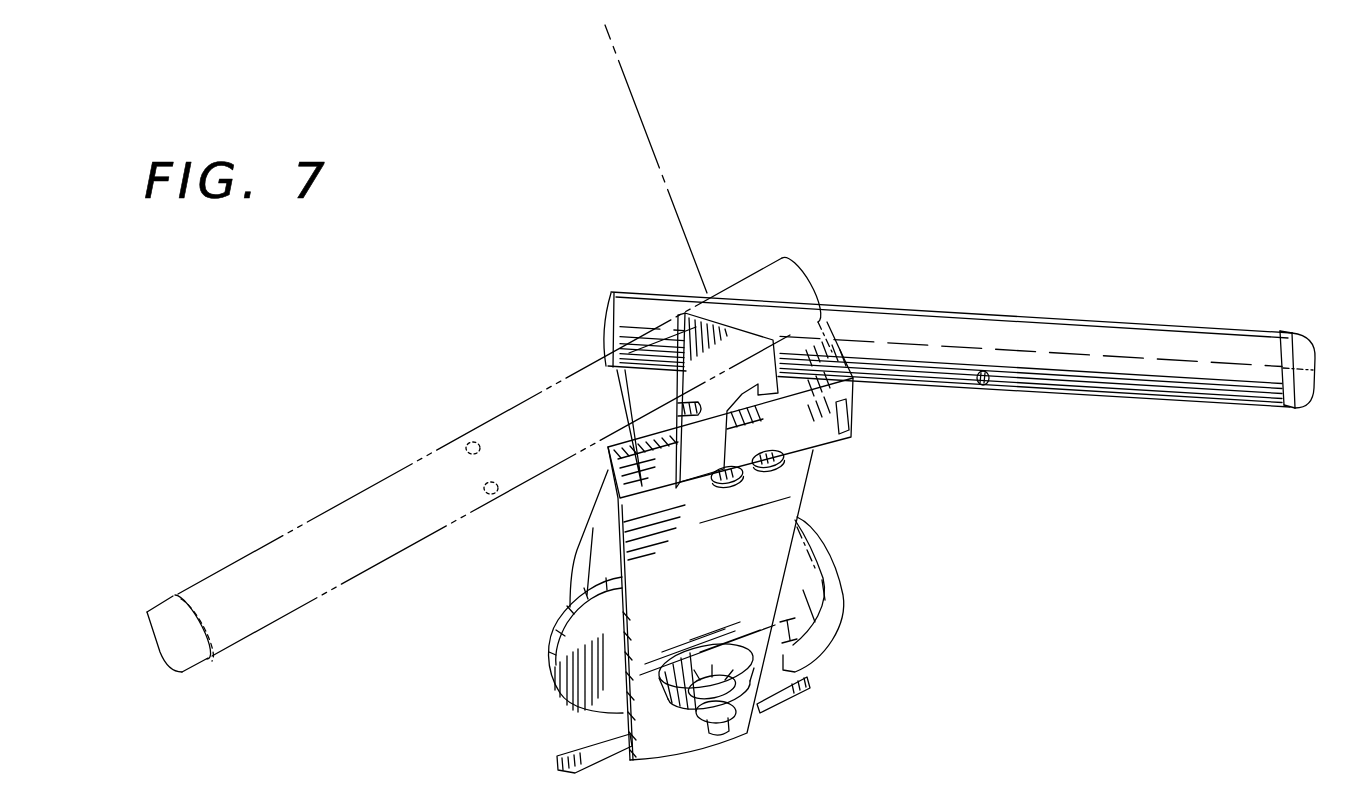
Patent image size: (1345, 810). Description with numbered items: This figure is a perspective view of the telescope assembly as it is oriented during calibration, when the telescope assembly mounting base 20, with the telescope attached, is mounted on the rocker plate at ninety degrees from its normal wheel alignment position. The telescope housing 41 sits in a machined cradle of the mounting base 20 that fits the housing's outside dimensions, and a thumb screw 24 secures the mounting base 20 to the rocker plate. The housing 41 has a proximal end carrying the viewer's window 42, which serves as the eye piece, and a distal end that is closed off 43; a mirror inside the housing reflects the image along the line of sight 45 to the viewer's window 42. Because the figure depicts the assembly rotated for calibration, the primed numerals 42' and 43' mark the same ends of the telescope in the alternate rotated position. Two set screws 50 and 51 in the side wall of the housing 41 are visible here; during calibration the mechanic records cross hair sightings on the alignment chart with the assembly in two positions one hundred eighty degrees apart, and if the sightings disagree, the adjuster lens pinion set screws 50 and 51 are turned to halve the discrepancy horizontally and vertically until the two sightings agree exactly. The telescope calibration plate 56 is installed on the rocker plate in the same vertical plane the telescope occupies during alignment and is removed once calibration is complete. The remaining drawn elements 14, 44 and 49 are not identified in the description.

The base mounting bracket 14 is at (600, 687).
The telescope assembly mounting base 20 is at (803, 428).
The thumb screw 24 is at (772, 468).
The telescope housing 41 is at (1103, 332).
The viewer's window 42 is at (1300, 318).
The end cap in alternate position 42' is at (434, 465).
The closed distal end 43 is at (557, 289).
The handle axis in alternate position 43' is at (836, 260).
The clamping screw 44 is at (724, 487).
The line of sight 45 is at (634, 101).
The locating hole 49 is at (982, 387).
The set screw 50 is at (470, 446).
The set screw 51 is at (493, 490).
The telescope calibration plate 56 is at (753, 374).